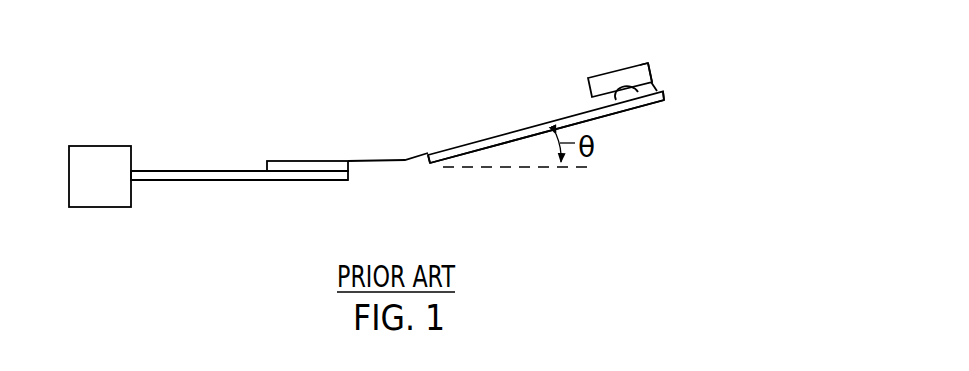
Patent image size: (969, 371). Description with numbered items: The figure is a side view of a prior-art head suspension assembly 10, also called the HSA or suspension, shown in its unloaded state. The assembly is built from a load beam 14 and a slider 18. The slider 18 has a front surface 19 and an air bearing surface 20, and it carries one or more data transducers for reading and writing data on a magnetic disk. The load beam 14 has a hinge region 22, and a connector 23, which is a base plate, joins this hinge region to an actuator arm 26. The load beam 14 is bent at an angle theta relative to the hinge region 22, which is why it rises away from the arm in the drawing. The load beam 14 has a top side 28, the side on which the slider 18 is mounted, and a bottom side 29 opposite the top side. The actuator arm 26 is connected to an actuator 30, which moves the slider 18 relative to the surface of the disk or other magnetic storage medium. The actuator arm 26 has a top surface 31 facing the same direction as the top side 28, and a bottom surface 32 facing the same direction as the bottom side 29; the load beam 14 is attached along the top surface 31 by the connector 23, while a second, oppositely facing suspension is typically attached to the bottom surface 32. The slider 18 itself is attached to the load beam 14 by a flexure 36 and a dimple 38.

The head suspension assembly 10 is at (435, 102).
The load beam 14 is at (523, 128).
The slider 18 is at (648, 62).
The front surface 19 is at (653, 72).
The air bearing surface 20 is at (618, 70).
The hinge region 22 is at (378, 162).
The connector 23 is at (302, 160).
The actuator arm 26 is at (163, 183).
The top side 28 is at (438, 147).
The bottom side 29 is at (620, 113).
The actuator 30 is at (101, 145).
The top surface 31 is at (207, 169).
The bottom surface 32 is at (240, 183).
The flexure 36 is at (665, 89).
The dimple 38 is at (594, 78).